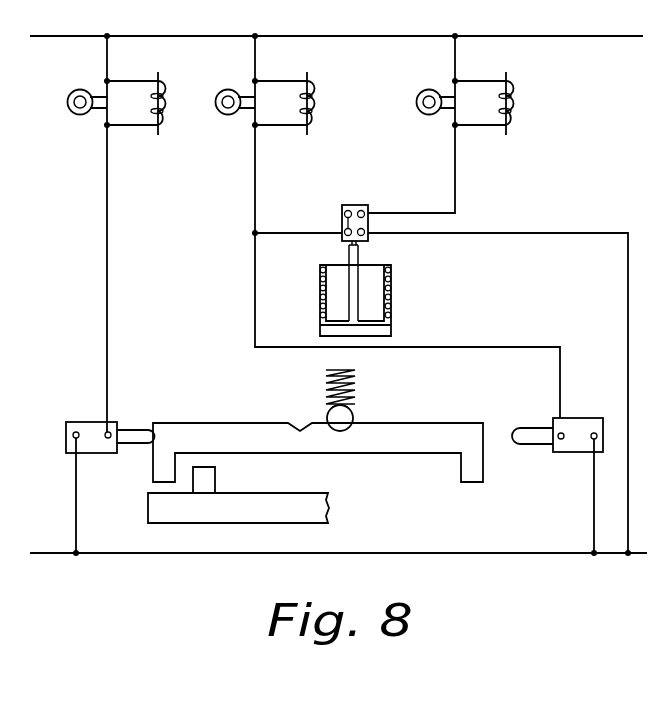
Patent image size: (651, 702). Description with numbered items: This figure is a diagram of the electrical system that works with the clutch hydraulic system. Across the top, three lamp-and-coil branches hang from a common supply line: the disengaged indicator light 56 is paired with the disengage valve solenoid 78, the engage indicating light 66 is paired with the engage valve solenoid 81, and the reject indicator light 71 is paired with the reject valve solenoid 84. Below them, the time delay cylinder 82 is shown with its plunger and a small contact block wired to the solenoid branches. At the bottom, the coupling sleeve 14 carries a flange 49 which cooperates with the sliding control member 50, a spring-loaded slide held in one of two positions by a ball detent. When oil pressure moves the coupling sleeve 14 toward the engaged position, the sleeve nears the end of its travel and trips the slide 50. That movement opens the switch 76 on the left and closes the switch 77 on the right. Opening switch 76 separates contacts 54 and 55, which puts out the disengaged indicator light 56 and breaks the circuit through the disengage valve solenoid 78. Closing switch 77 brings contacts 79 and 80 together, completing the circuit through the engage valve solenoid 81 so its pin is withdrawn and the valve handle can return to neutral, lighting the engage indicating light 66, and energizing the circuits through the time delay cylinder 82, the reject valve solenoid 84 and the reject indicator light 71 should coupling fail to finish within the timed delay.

The coupling sleeve 14 is at (207, 518).
The flange 49 is at (216, 473).
The sliding control member 50 is at (408, 426).
The contact 54 is at (107, 431).
The contact 55 is at (73, 436).
The disengaged indicator light 56 is at (78, 114).
The engage indicating light 66 is at (229, 88).
The reject indicator light 71 is at (423, 114).
The switch 76 is at (90, 454).
The switch 77 is at (578, 453).
The disengage valve solenoid 78 is at (164, 126).
The contact 79 is at (590, 432).
The contact 80 is at (561, 448).
The engage valve solenoid 81 is at (313, 126).
The time delay cylinder 82 is at (392, 292).
The reject valve solenoid 84 is at (510, 126).